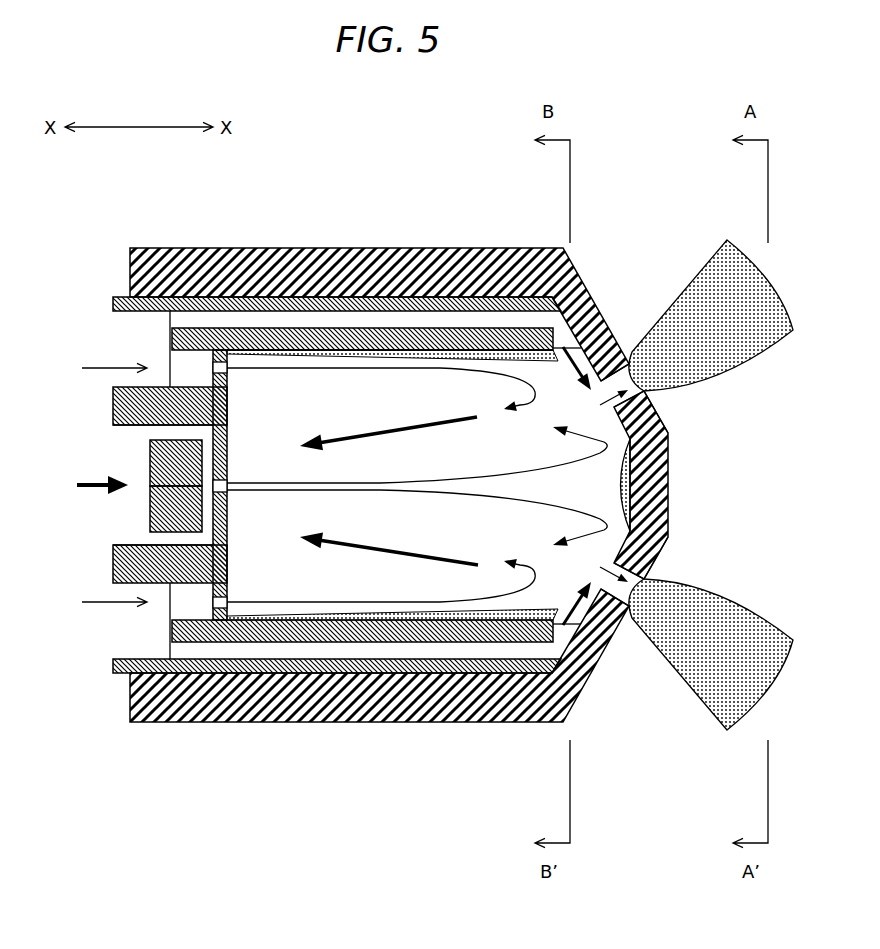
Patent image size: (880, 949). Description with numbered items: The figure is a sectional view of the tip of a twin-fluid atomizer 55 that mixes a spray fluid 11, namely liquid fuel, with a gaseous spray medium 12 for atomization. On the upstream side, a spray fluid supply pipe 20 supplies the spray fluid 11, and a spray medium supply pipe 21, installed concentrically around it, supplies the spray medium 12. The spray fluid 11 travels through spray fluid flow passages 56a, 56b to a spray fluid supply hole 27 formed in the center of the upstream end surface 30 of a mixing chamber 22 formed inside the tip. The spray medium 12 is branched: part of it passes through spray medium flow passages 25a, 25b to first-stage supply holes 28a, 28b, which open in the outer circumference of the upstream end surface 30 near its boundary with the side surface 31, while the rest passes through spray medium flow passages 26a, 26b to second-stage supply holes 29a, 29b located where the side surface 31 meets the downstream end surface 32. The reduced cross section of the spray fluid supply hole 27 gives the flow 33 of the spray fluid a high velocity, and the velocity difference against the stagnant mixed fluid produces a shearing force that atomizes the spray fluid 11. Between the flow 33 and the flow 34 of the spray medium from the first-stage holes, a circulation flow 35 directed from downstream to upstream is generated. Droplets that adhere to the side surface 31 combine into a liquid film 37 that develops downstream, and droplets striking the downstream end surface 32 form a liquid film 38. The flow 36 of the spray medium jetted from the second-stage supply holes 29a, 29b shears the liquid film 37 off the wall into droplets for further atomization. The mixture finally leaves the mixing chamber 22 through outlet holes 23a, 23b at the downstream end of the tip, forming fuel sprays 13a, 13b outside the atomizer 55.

The spray fluid 11 is at (78, 478).
The spray medium 12 is at (100, 366).
The spray 13a is at (692, 283).
The spray 13b is at (690, 695).
The spray fluid supply pipe 20 is at (65, 469).
The spray medium supply pipe 21 is at (140, 348).
The mixing chamber 22 is at (324, 417).
The outlet hole 23a is at (644, 392).
The outlet hole 23b is at (644, 580).
The spray medium flow passage 25a is at (178, 380).
The spray medium flow passage 25b is at (178, 592).
The spray medium flow passage 26a is at (372, 326).
The spray medium flow passage 26b is at (355, 644).
The spray fluid supply hole 27 is at (228, 483).
The first-stage supply hole 28a is at (228, 371).
The first-stage supply hole 28b is at (228, 598).
The second-stage supply hole 29a is at (562, 370).
The second-stage supply hole 29b is at (562, 605).
The upstream end surface of mixing chamber 30 is at (228, 541).
The side surface of mixing chamber 31 is at (345, 360).
The downstream end surface of mixing chamber 32 is at (613, 452).
The flow of spray fluid 33 is at (372, 483).
The flow of spray medium 34 is at (402, 370).
The circulation flow 35 is at (438, 419).
The flow of spray medium 36 is at (605, 345).
The liquid film 37 is at (517, 376).
The liquid film 38 is at (620, 500).
The atomizer 55 is at (670, 490).
The spray fluid flow passage 56a is at (150, 434).
The spray fluid flow passage 56b is at (158, 540).